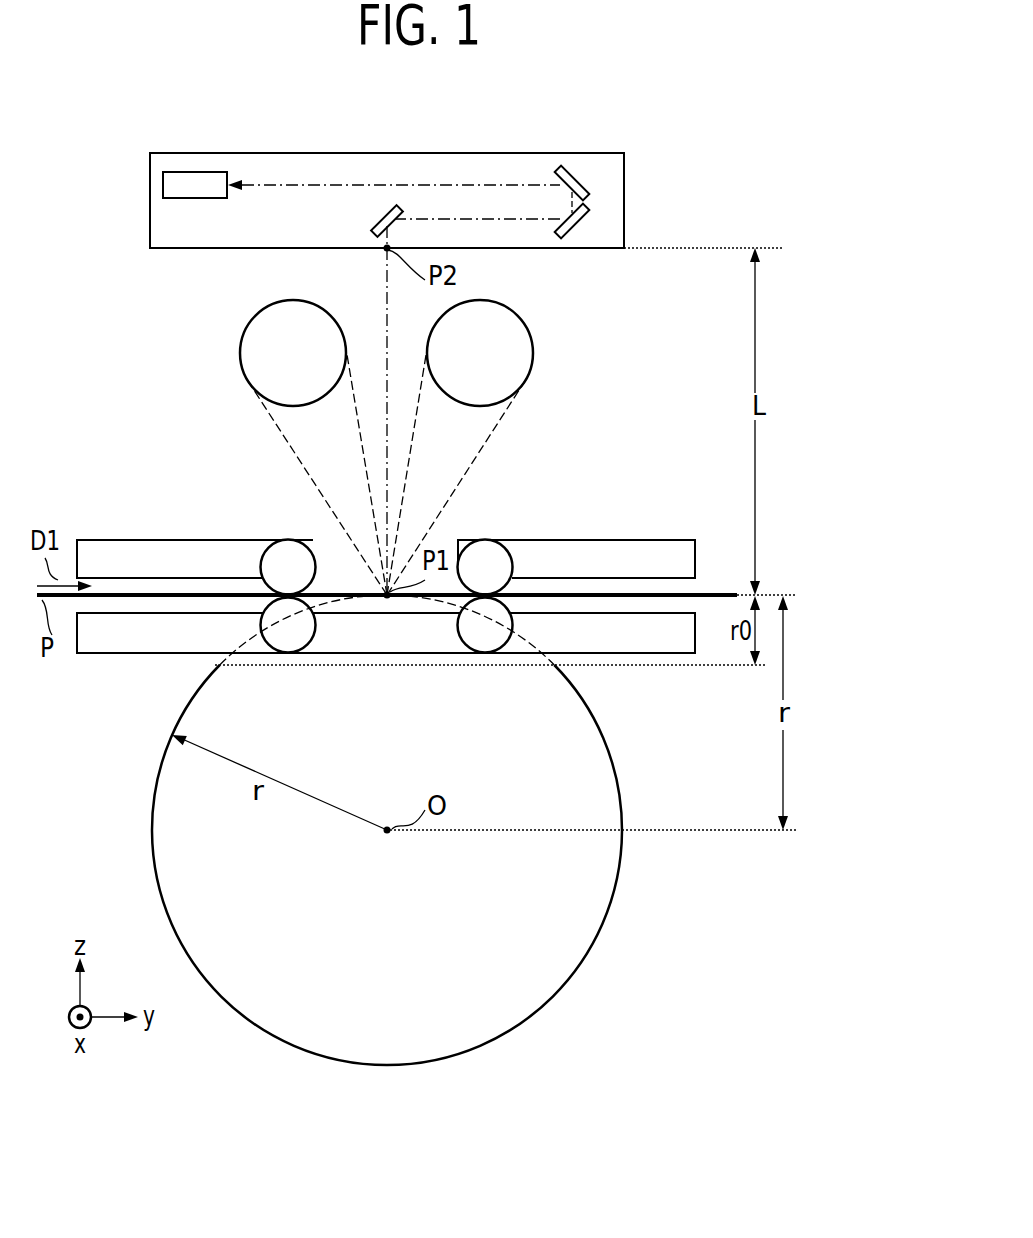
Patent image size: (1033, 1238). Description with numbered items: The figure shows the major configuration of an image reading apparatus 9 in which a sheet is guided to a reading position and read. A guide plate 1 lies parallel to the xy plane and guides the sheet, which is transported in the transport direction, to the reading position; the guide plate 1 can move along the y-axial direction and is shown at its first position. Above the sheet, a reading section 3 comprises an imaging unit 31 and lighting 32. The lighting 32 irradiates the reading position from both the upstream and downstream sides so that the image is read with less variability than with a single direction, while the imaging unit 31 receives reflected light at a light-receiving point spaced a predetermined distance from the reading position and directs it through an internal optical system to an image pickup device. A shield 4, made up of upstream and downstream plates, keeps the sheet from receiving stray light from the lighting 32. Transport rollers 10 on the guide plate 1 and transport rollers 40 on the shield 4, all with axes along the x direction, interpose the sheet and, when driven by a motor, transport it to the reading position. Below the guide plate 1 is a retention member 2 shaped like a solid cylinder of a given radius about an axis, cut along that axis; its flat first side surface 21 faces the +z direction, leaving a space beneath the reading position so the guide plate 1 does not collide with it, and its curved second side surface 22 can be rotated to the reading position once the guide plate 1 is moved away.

The guide plate 1 is at (384, 582).
The retention member 2 is at (417, 830).
The reading section 3 is at (411, 372).
The shield 4 is at (108, 545).
The image reading apparatus 9 is at (420, 830).
The transport rollers 10 is at (389, 555).
The first side surface 21 is at (538, 637).
The second side surface 22 is at (617, 772).
The imaging unit 31 is at (593, 248).
The lighting 32 is at (255, 357).
The transport rollers 40 is at (382, 555).